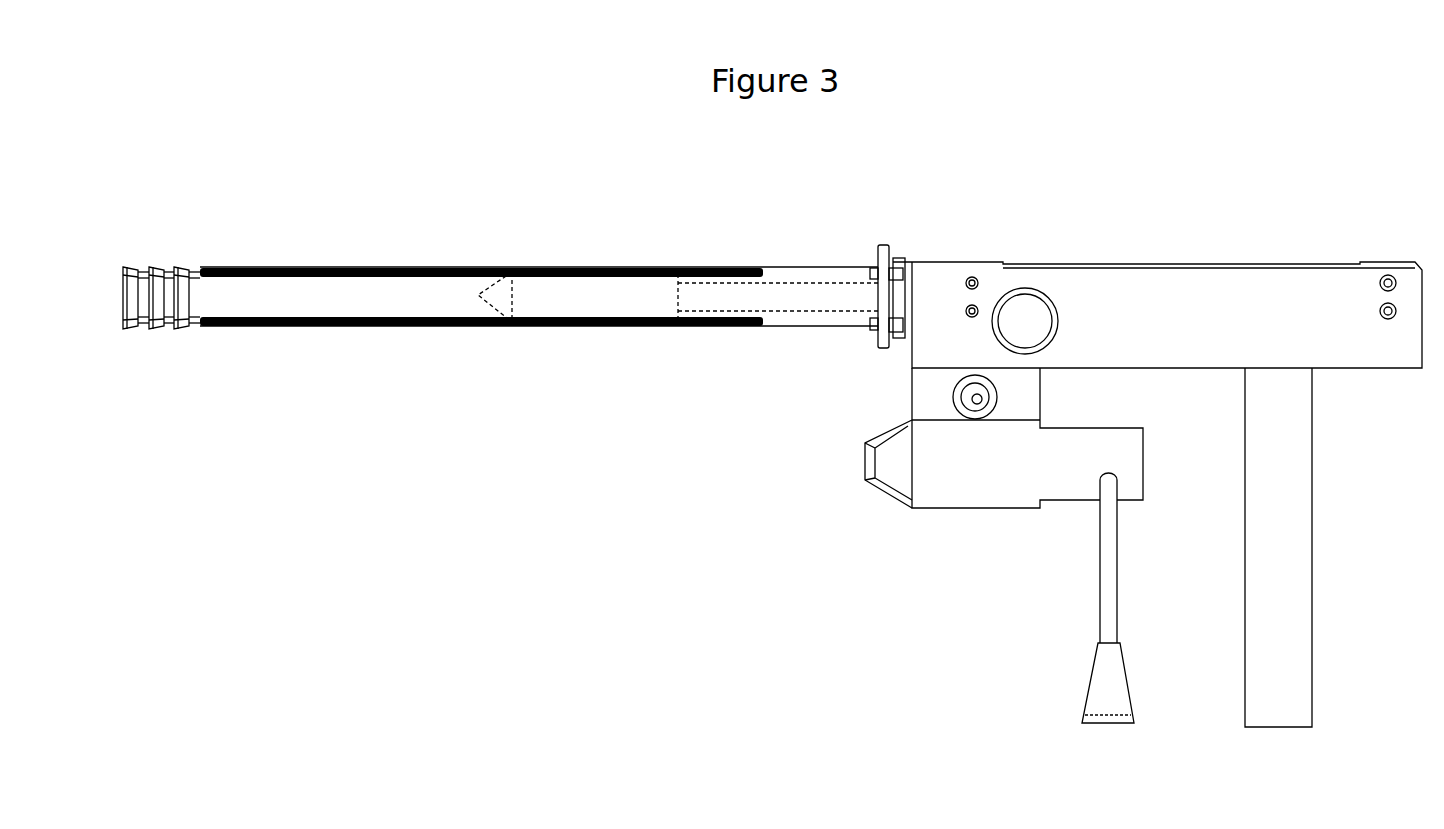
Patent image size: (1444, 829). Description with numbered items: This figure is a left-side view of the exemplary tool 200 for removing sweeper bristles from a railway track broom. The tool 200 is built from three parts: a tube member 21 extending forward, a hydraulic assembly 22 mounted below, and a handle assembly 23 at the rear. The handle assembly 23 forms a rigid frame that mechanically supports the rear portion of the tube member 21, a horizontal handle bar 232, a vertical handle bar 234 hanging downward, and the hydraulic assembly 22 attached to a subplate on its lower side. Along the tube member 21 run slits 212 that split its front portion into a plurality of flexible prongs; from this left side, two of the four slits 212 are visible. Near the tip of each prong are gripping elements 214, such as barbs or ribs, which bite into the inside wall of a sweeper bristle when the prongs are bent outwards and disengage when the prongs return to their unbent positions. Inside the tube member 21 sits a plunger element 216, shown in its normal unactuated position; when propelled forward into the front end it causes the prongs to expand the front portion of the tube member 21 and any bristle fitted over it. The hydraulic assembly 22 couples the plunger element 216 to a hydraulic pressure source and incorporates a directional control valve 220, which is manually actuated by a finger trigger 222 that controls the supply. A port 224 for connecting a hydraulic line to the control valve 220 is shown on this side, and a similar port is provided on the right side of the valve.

The tool 200 is at (1150, 160).
The tube member 21 is at (398, 372).
The slits 212 is at (305, 318).
The gripping elements 214 is at (160, 330).
The plunger element 216 is at (605, 268).
The hydraulic assembly 22 is at (862, 523).
The directional control valve 220 is at (992, 479).
The finger trigger 222 is at (1102, 668).
The port 224 is at (950, 395).
The handle assembly 23 is at (1303, 240).
The horizontal handle bar 232 is at (1025, 290).
The vertical handle bar 234 is at (1248, 705).